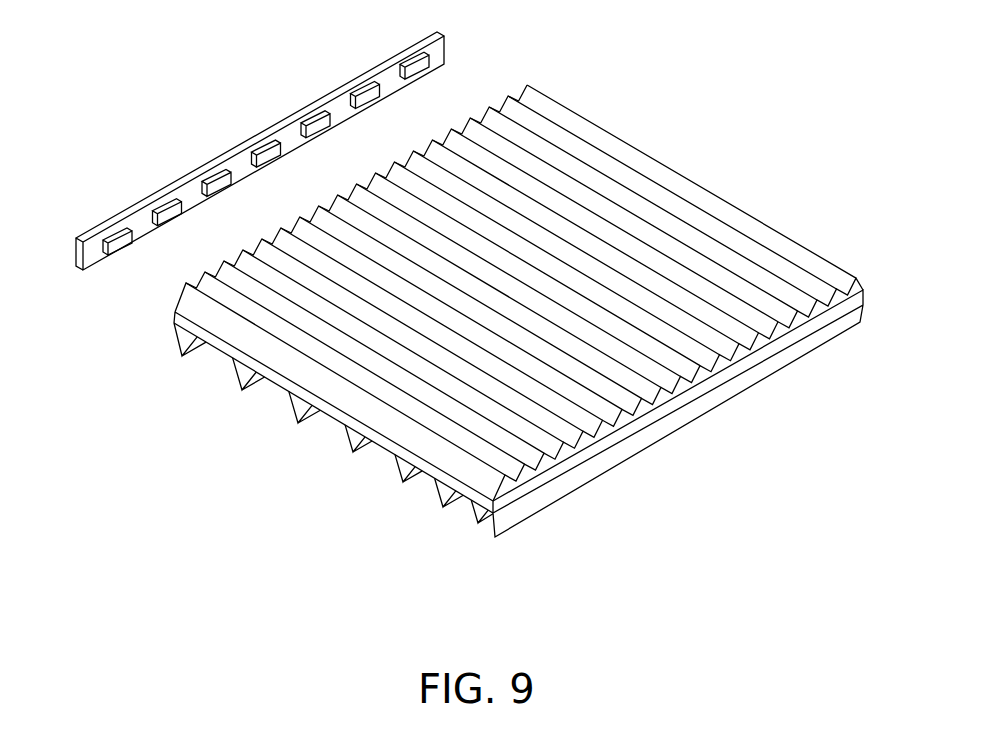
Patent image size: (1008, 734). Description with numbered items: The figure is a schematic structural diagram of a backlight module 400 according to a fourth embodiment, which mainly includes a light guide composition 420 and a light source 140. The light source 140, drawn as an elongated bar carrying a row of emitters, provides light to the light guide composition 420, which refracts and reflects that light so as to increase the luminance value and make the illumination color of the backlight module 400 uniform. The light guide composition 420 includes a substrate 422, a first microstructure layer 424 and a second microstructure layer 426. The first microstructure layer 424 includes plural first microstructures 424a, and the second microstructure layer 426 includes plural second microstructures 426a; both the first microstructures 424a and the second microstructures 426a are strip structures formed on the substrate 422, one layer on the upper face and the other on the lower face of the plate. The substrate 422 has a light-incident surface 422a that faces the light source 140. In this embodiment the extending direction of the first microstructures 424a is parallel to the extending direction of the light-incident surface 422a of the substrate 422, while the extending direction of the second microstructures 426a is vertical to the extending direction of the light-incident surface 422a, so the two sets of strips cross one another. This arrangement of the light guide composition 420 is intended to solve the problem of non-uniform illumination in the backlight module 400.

The backlight module 400 is at (112, 62).
The light source 140 is at (438, 50).
The light guide composition 420 is at (307, 462).
The substrate 422 is at (498, 500).
The light-incident surface 422a is at (173, 312).
The first microstructure layer 424 is at (470, 534).
The first microstructures 424a is at (403, 482).
The second microstructure layer 426 is at (680, 402).
The second microstructures 426a is at (569, 454).